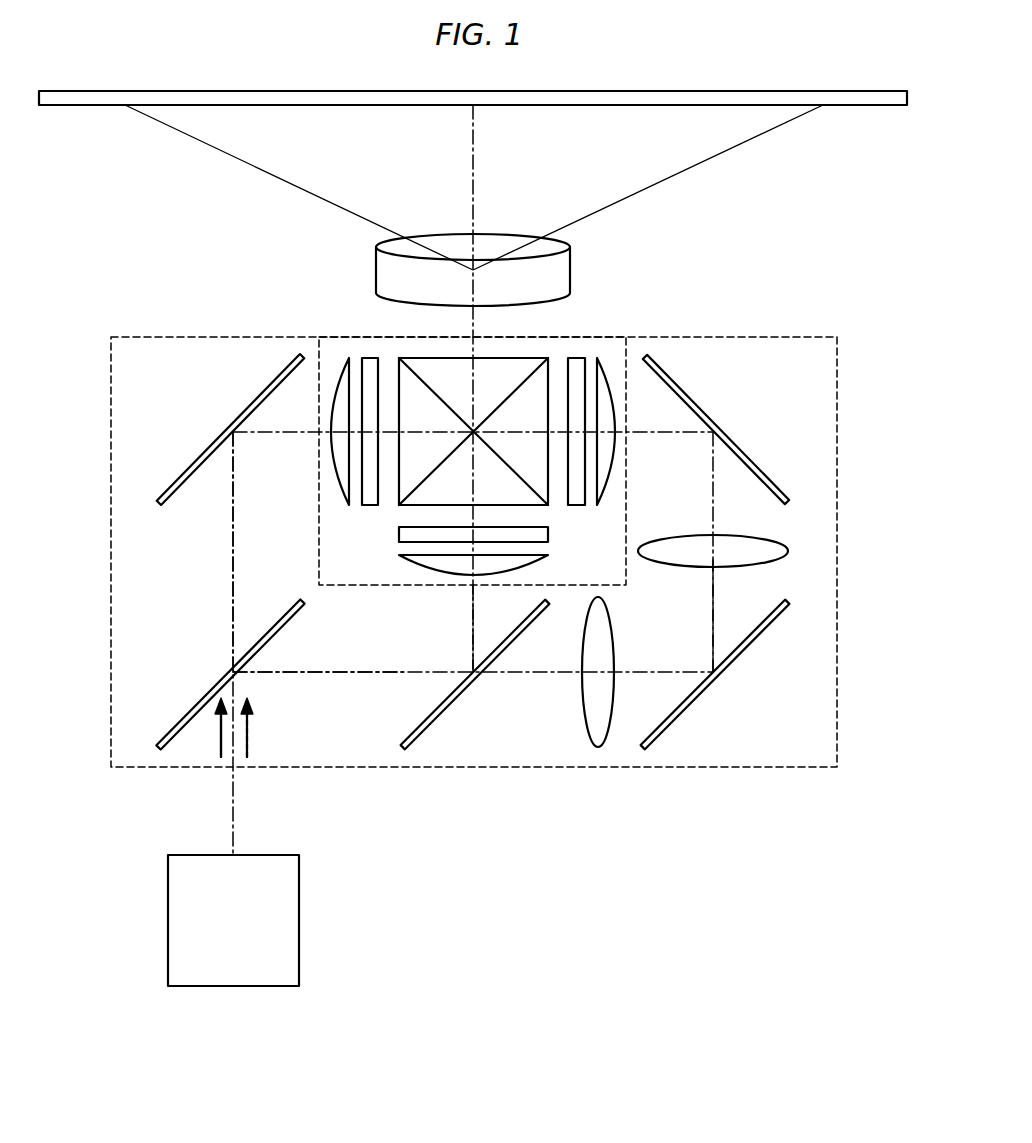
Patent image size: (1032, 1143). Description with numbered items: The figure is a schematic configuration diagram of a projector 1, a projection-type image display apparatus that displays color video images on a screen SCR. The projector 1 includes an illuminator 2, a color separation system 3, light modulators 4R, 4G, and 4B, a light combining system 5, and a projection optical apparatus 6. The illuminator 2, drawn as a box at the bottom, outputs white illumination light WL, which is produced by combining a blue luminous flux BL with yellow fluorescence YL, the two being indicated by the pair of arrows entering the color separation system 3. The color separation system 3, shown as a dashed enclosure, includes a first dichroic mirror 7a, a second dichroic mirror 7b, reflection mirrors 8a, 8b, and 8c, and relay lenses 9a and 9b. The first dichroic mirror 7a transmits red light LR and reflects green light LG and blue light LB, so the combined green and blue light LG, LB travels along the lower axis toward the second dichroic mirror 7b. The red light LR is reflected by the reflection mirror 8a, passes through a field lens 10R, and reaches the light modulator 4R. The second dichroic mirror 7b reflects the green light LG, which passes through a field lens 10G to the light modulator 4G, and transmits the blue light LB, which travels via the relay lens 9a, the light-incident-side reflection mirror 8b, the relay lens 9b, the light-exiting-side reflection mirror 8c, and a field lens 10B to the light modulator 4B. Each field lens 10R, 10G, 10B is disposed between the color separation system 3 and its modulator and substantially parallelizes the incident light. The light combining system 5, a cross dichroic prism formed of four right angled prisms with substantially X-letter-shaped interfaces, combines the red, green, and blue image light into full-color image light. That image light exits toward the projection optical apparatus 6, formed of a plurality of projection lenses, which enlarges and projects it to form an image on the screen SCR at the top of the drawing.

The projector 1 is at (835, 322).
The illuminator 2 is at (300, 955).
The color separation system 3 is at (111, 493).
The light modulator 4R is at (369, 357).
The light modulator 4G is at (400, 534).
The light modulator 4B is at (580, 357).
The light combining system 5 is at (500, 368).
The projection optical apparatus 6 is at (452, 246).
The first dichroic mirror 7a is at (197, 707).
The second dichroic mirror 7b is at (448, 708).
The reflection mirror 8a is at (206, 450).
The reflection mirror 8b is at (742, 657).
The reflection mirror 8c is at (745, 449).
The relay lens 9a is at (582, 690).
The relay lens 9b is at (773, 543).
The field lens 10R is at (342, 357).
The field lens 10G is at (405, 560).
The field lens 10B is at (602, 357).
The screen SCR is at (872, 108).
The red light LR is at (233, 575).
The green light LG is at (473, 624).
The blue light LB is at (713, 623).
The green light and blue light LG, LB is at (308, 673).
The luminous flux BL is at (247, 740).
The fluorescence YL is at (221, 757).
The illumination light WL is at (378, 772).